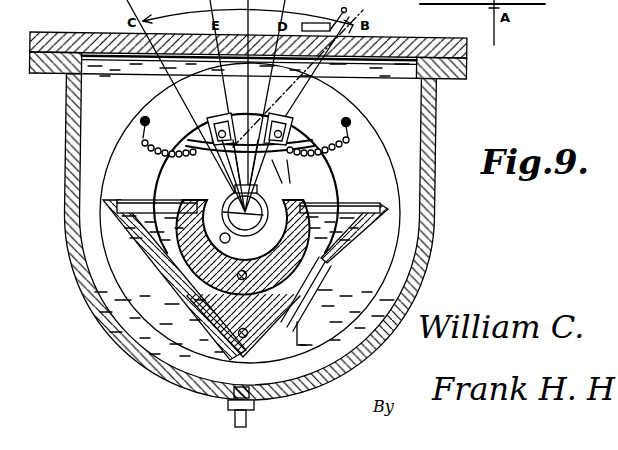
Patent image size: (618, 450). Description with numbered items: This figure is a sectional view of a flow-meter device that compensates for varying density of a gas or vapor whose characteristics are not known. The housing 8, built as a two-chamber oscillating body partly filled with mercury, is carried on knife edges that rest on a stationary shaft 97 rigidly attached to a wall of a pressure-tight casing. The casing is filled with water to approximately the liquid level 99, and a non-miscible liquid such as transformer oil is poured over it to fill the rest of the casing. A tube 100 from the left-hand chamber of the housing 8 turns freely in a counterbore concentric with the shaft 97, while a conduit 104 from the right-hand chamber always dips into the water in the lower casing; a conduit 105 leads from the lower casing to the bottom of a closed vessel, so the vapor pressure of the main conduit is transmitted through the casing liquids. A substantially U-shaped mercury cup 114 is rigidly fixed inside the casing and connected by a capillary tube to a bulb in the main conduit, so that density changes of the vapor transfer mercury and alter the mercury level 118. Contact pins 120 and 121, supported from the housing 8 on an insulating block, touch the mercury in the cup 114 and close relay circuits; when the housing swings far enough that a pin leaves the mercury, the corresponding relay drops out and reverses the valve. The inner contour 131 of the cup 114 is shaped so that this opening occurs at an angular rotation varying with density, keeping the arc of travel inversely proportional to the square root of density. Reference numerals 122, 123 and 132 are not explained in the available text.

The housing 8 is at (123, 145).
The stationary shaft 97 is at (262, 212).
The liquid level 99 is at (422, 273).
The tube 100 is at (186, 80).
The conduit 104 is at (322, 82).
The conduit 105 is at (231, 417).
The mercury cup 114 is at (398, 238).
The mercury level 118 is at (425, 170).
The contact pin 120 is at (336, 183).
The contact pin 121 is at (166, 183).
The springs 122 is at (148, 143).
The anchor pins 123 is at (143, 112).
The inner contour of cup 131 is at (385, 212).
The left blade 132 is at (147, 250).